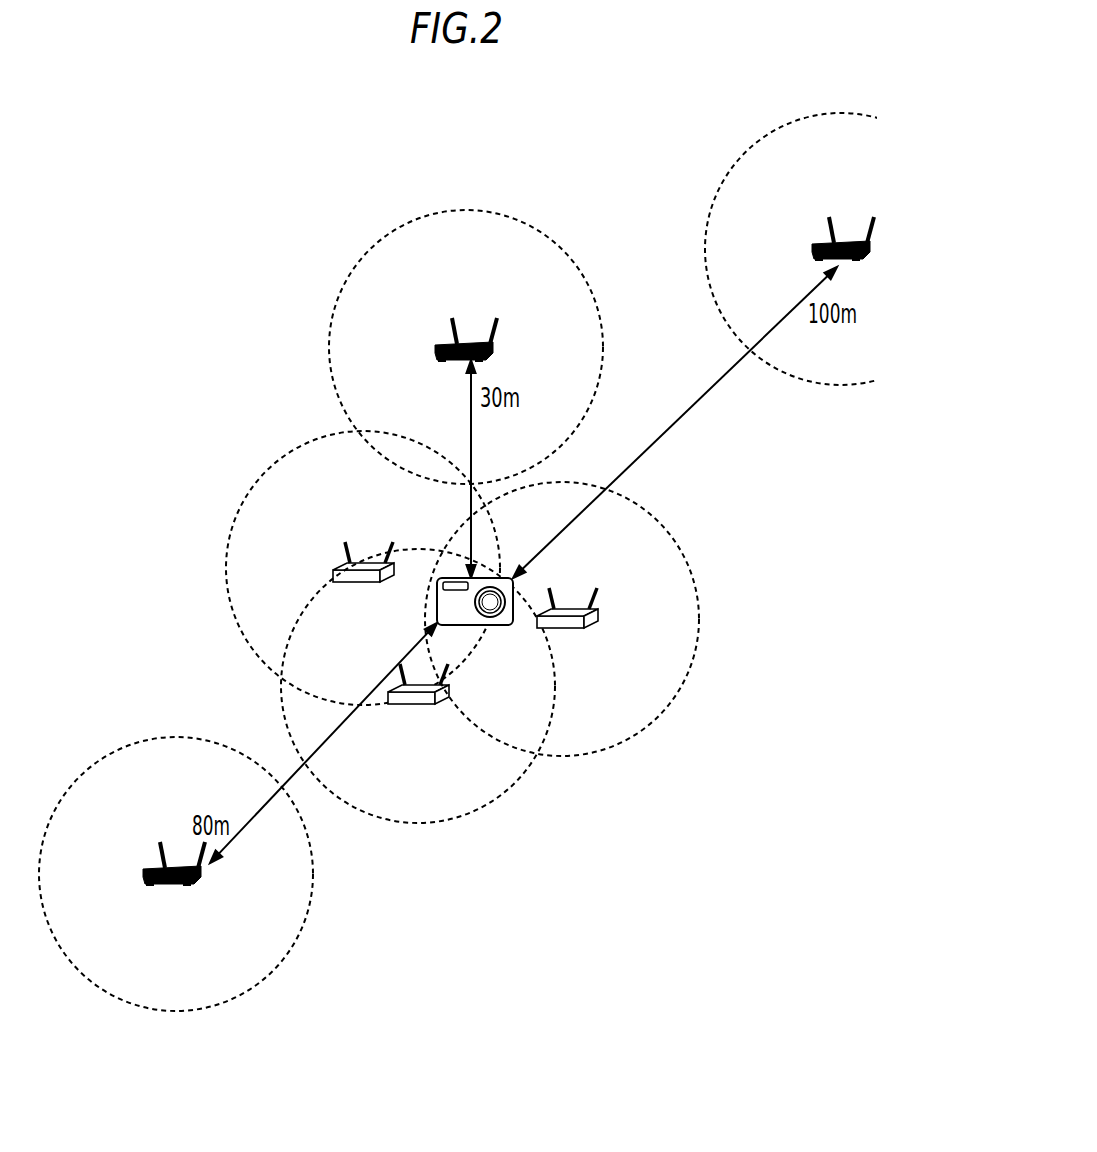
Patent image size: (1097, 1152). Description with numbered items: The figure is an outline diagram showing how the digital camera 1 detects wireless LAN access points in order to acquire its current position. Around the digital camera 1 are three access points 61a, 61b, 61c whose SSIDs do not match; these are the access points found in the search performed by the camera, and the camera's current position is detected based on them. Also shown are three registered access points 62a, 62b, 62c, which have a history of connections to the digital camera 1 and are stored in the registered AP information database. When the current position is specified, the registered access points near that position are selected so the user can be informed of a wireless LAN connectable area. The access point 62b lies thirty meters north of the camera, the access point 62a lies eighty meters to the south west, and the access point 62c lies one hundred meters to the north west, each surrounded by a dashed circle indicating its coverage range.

The digital camera 1 is at (495, 626).
The access point 61a is at (360, 582).
The access point 61b is at (413, 704).
The access point 61c is at (590, 626).
The registered access point 62a is at (171, 885).
The registered access point 62b is at (455, 360).
The registered access point 62c is at (812, 255).